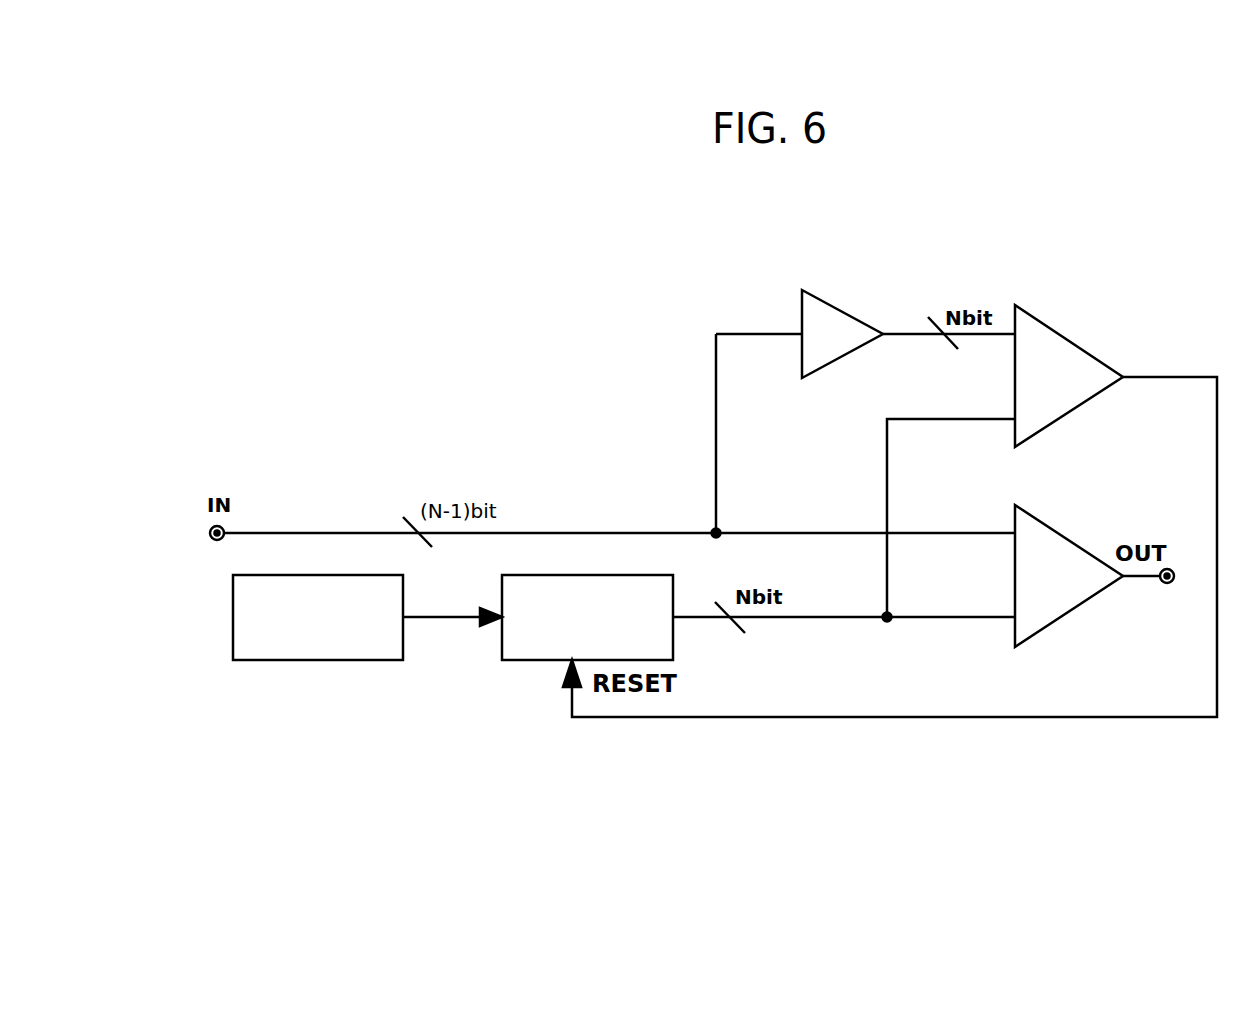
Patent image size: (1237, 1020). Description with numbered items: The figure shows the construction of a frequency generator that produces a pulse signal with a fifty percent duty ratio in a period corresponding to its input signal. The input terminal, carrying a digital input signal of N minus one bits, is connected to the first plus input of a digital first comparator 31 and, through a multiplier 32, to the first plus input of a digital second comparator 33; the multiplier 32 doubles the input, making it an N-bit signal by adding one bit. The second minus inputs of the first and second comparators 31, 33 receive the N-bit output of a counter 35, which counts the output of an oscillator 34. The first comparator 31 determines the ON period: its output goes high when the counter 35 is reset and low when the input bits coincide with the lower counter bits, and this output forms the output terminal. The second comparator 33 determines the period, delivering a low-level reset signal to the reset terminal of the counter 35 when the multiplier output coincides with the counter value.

The first comparator 31 is at (1065, 535).
The multiplier 32 is at (838, 305).
The second comparator 33 is at (1068, 338).
The oscillator 34 is at (322, 574).
The counter 35 is at (603, 574).